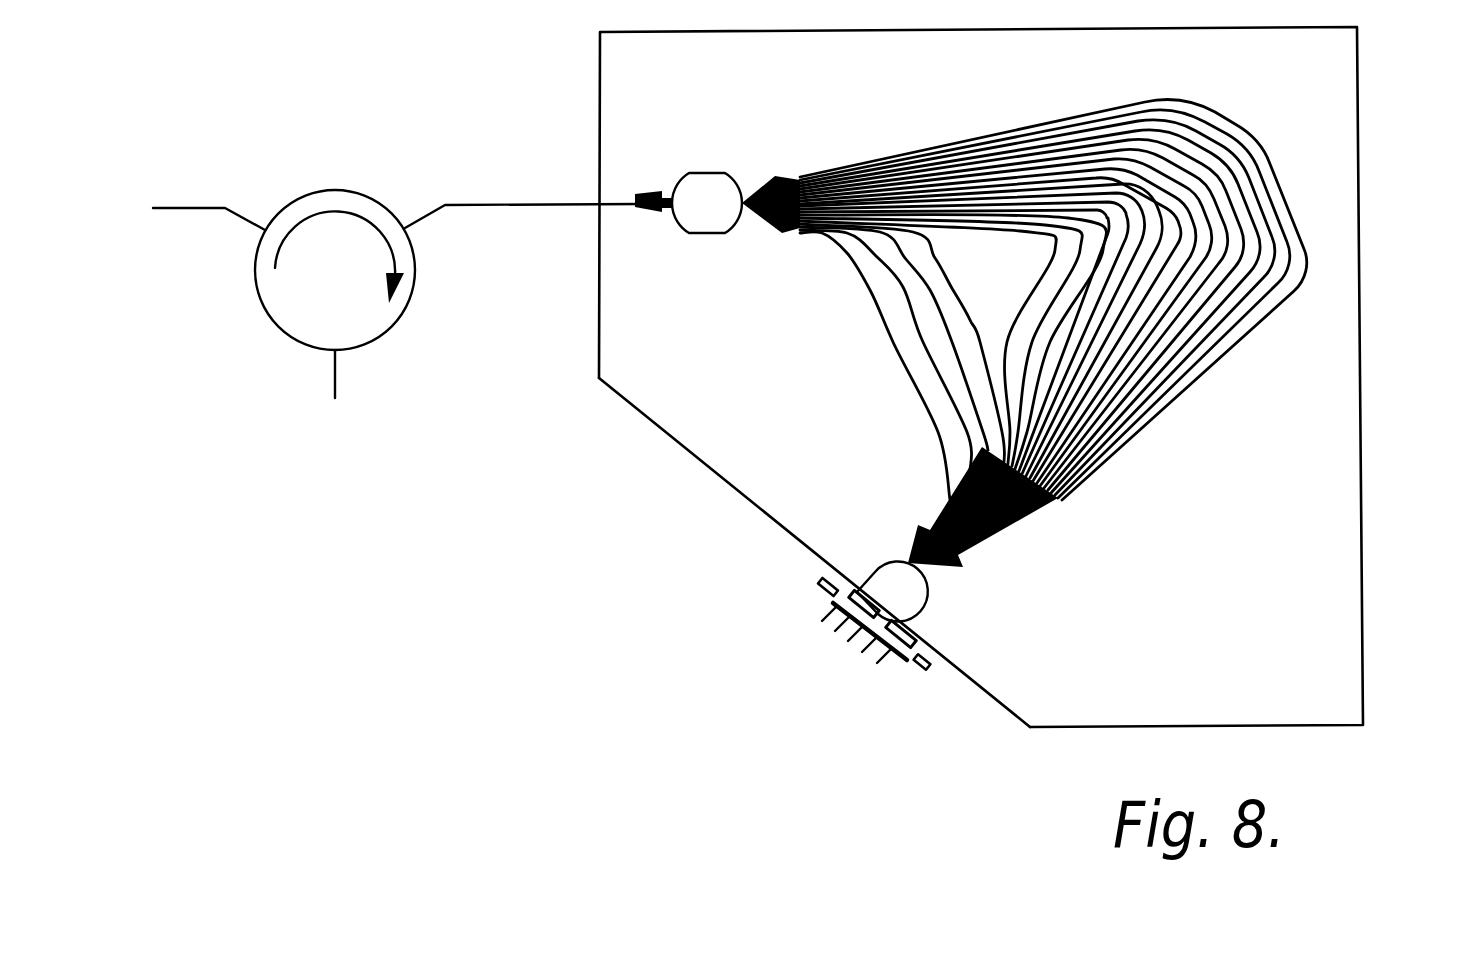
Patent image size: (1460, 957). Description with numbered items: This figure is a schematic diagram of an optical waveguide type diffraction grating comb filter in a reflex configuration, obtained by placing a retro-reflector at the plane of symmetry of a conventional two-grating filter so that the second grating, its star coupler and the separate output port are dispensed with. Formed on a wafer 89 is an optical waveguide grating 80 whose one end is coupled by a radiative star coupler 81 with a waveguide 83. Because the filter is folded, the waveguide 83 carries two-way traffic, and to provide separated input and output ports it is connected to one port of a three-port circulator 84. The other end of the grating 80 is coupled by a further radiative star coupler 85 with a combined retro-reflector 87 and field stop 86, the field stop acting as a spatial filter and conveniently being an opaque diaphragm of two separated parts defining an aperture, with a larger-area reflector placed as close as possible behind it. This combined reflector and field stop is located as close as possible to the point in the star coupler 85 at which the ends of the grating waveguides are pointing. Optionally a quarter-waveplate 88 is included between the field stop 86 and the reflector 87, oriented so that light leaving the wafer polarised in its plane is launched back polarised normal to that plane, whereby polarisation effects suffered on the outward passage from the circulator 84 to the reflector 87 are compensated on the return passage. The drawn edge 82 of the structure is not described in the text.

The optical waveguide grating 80 is at (1018, 287).
The radiative star coupler 81 is at (705, 214).
The substrate edge 82 is at (697, 463).
The waveguide 83 is at (608, 204).
The 3-port circulator 84 is at (358, 317).
The radiative star coupler 85 is at (908, 604).
The field stop 86 is at (888, 617).
The retro-reflector 87 is at (898, 660).
The quarter-waveplate 88 is at (820, 590).
The wafer 89 is at (1360, 232).